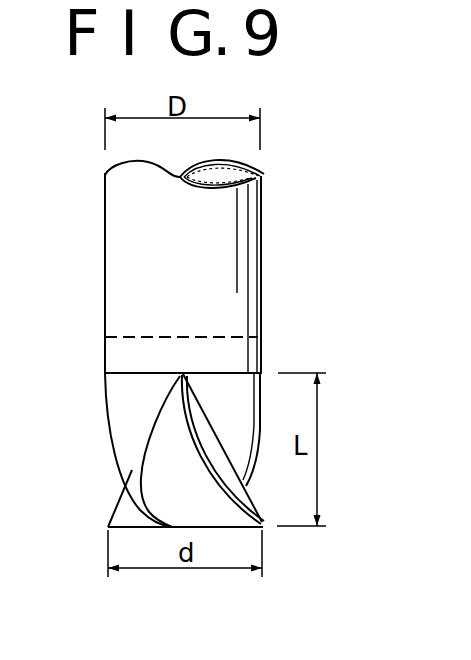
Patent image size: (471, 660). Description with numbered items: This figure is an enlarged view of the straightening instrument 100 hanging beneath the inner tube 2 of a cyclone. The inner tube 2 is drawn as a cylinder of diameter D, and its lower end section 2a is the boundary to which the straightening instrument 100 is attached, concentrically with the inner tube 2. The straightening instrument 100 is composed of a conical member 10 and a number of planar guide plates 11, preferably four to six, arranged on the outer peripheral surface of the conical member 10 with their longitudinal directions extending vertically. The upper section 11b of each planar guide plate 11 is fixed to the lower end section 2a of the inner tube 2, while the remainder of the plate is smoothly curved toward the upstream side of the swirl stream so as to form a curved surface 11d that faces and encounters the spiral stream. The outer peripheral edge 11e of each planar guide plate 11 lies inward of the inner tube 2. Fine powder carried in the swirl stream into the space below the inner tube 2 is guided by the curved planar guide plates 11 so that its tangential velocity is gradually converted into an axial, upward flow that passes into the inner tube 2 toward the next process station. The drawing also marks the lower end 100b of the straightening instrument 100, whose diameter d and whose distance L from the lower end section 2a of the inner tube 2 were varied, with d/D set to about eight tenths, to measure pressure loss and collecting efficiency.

The inner tube 2 is at (113, 198).
The lower end section of the inner tube 2a is at (108, 373).
The conical member 10 is at (162, 454).
The planar guide plate 11 is at (112, 513).
The upper section of the planar guide plate 11b is at (117, 352).
The curved surface of the planar guide plate 11d is at (124, 432).
The outer peripheral edge of the planar guide plate 11e is at (182, 407).
The straightening instrument 100 is at (104, 463).
The lower end of the straightening instrument 100b is at (262, 530).